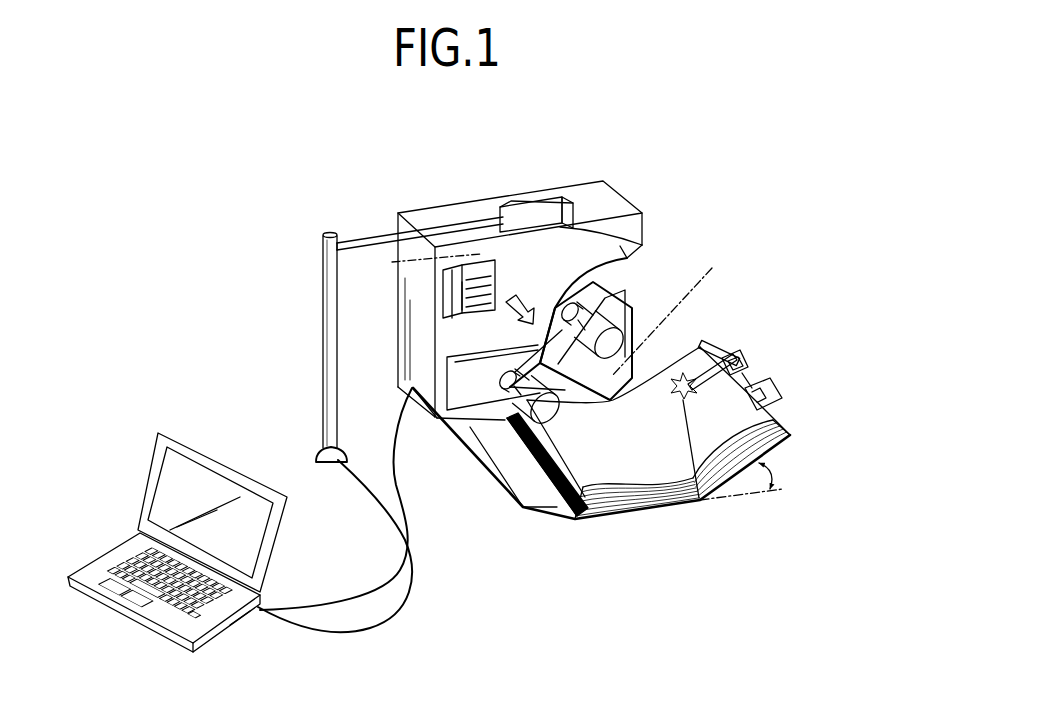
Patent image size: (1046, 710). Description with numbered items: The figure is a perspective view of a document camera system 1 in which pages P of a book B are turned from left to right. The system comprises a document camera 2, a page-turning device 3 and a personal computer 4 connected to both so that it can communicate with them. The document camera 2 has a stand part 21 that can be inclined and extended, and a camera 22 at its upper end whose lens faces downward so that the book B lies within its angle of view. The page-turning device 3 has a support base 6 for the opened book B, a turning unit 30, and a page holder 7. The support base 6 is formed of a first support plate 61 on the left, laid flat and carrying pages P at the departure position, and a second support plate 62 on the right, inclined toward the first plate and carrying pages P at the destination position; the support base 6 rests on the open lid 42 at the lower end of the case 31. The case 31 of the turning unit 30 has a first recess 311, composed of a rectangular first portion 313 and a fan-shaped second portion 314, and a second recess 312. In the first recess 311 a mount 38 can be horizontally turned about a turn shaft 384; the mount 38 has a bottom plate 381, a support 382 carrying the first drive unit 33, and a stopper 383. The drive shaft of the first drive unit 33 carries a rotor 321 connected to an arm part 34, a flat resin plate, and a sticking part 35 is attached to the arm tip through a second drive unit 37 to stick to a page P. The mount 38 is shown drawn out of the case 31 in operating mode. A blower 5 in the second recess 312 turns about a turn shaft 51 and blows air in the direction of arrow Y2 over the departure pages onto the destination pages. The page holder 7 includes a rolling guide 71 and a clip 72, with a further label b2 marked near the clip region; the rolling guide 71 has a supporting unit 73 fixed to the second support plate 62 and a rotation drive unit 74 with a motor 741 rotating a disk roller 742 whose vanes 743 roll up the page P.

The document camera system 1 is at (432, 137).
The document camera 2 is at (301, 345).
The stand part 21 is at (326, 378).
The camera 22 is at (550, 200).
The page-turning device 3 is at (507, 306).
The turning unit 30 is at (384, 220).
The case 31 is at (523, 190).
The first recess 311 is at (577, 270).
The second recess 312 is at (490, 258).
The first portion 313 is at (457, 353).
The second portion 314 is at (622, 300).
The rotor 321 is at (624, 327).
The first drive unit 33 is at (584, 302).
The arm part 34 is at (553, 363).
The sticking part 35 is at (490, 428).
The second drive unit 37 is at (437, 418).
The mount 38 is at (635, 299).
The bottom plate 381 is at (694, 346).
The support 382 is at (565, 307).
The stopper 383 is at (606, 302).
The turn shaft 384 is at (681, 309).
The personal computer 4 is at (228, 462).
The lid 42 is at (518, 492).
The blower 5 is at (453, 287).
The turn shaft 51 is at (418, 264).
The support base 6 is at (778, 411).
The first support plate 61 is at (672, 418).
The second support plate 62 is at (782, 442).
The page holder 7 is at (756, 315).
The rolling guide 71 is at (723, 362).
The clip 72 is at (780, 378).
The supporting unit 73 is at (695, 405).
The rotation drive unit 74 is at (565, 489).
The motor 741 is at (690, 400).
The disk roller 742 is at (590, 510).
The vanes 743 is at (573, 497).
The book B is at (691, 343).
The pages P is at (698, 358).
The rod b2 is at (748, 384).
The arrow Y2 is at (521, 296).